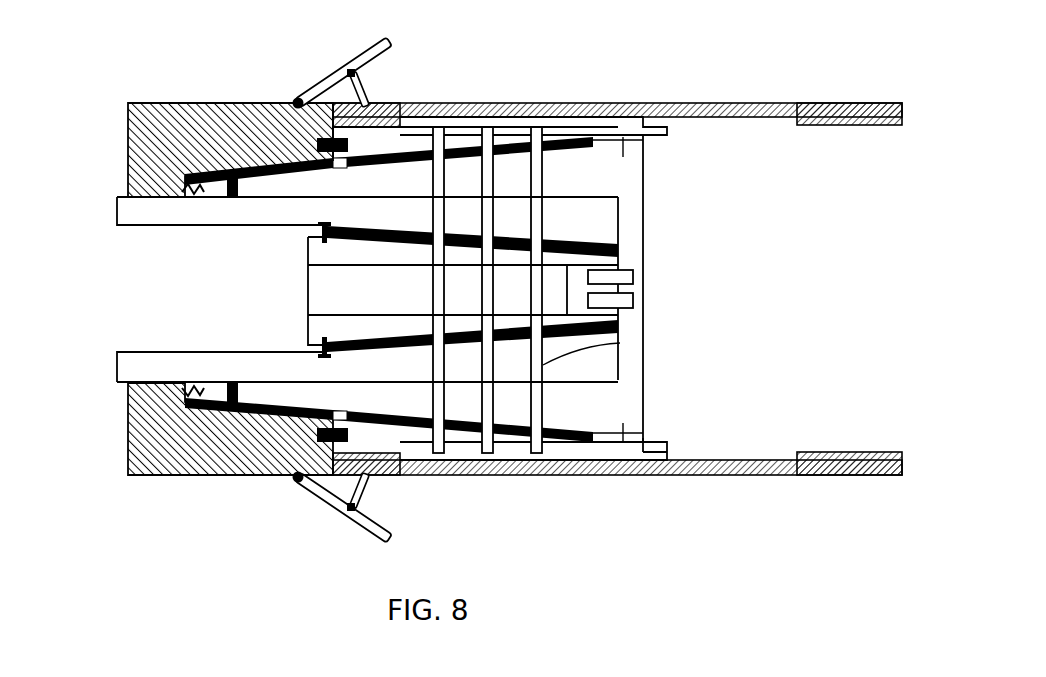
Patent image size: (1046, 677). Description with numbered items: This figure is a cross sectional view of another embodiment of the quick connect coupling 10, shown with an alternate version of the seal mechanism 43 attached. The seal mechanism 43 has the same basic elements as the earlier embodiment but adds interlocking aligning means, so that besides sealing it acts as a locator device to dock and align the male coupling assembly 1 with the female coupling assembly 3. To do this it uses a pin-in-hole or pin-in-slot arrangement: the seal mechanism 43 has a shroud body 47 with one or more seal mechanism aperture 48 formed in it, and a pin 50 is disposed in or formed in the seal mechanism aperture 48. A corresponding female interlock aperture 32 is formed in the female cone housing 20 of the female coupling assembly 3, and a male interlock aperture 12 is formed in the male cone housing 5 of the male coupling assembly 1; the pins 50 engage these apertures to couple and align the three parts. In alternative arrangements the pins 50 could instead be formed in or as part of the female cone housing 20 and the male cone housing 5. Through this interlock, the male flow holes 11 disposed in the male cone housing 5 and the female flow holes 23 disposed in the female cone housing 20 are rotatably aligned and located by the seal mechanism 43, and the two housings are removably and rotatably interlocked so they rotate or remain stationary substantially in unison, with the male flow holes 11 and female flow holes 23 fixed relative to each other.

The male coupling assembly 1 is at (300, 259).
The female coupling assembly 3 is at (838, 66).
The male cone housing 5 is at (117, 215).
The quick connect coupling 10 is at (798, 287).
The male flow holes 11 is at (620, 343).
The male interlock aperture 12 is at (192, 192).
The female cone housing 20 is at (665, 133).
The female flow holes 23 is at (593, 432).
The female interlock aperture 32 is at (352, 136).
The seal mechanism 43 is at (116, 450).
The shroud body 47 is at (128, 413).
The seal mechanism aperture 48 is at (333, 432).
The pin 50 is at (297, 101).